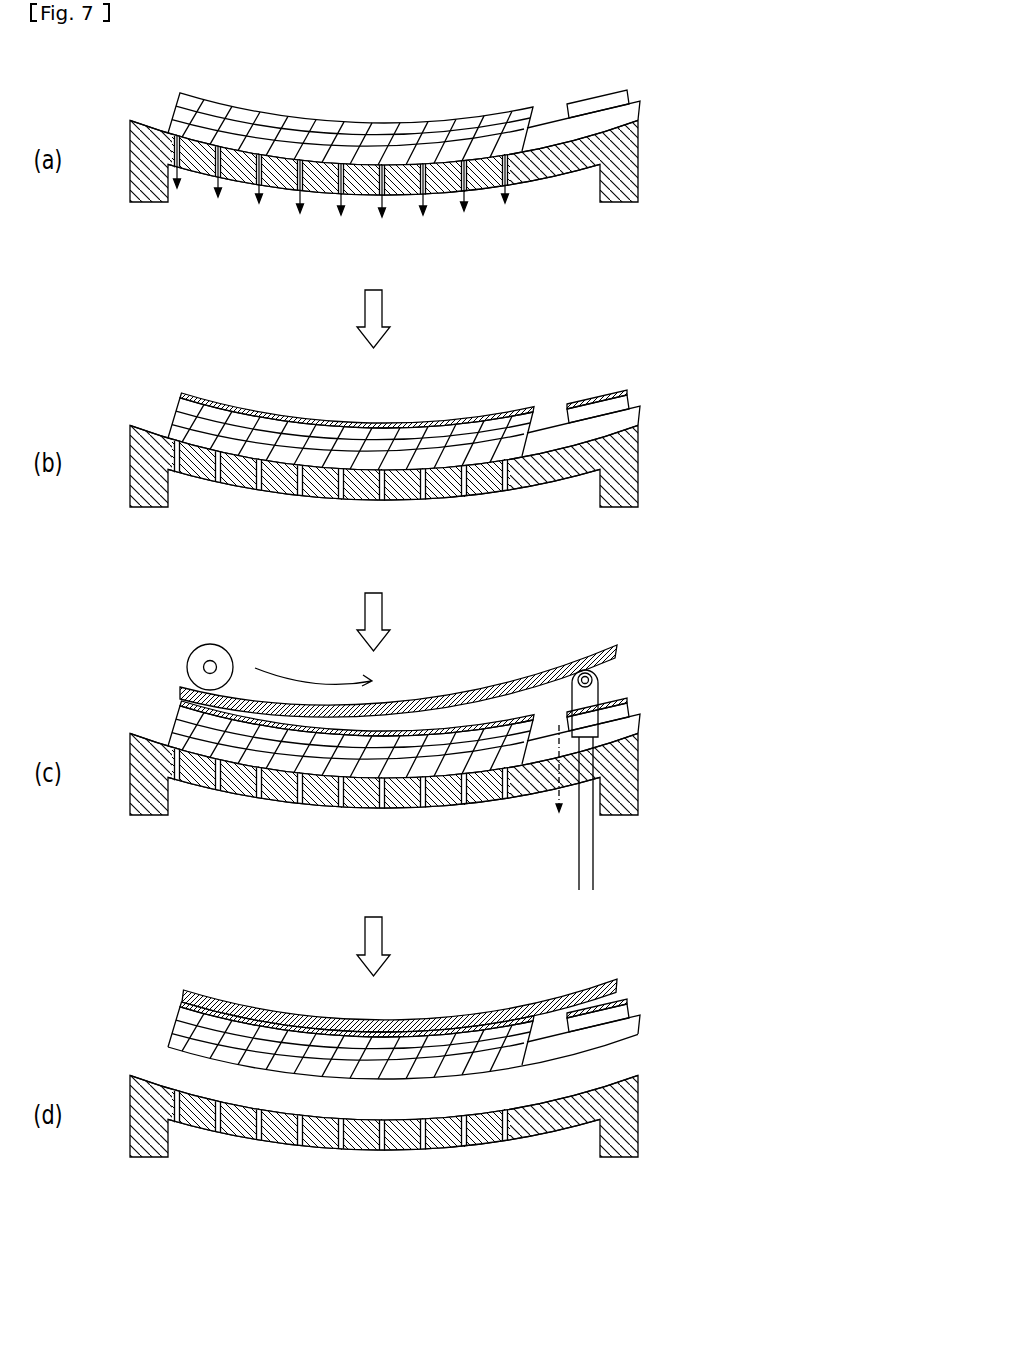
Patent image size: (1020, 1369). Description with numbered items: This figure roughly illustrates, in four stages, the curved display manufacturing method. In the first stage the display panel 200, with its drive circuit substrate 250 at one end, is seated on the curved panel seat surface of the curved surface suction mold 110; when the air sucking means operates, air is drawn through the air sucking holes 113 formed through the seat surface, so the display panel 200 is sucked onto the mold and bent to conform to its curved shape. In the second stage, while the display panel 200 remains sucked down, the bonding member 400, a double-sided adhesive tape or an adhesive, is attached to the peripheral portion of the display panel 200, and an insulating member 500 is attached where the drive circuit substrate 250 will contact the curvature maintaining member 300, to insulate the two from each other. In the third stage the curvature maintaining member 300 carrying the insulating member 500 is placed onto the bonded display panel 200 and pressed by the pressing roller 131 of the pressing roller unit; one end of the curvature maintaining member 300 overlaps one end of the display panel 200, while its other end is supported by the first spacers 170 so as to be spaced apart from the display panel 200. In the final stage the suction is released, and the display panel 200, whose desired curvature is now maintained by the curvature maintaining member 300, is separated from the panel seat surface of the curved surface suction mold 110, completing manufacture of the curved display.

The curved surface suction mold 110 is at (630, 166).
The air sucking holes 113 is at (288, 186).
The pressing roller 131 is at (209, 645).
The first spacers 170 is at (575, 670).
The display panel 200 is at (338, 122).
The drive circuit substrate 250 is at (576, 103).
The curvature maintaining member 300 is at (490, 684).
The bonding member 400 is at (425, 420).
The insulating member 500 is at (586, 399).